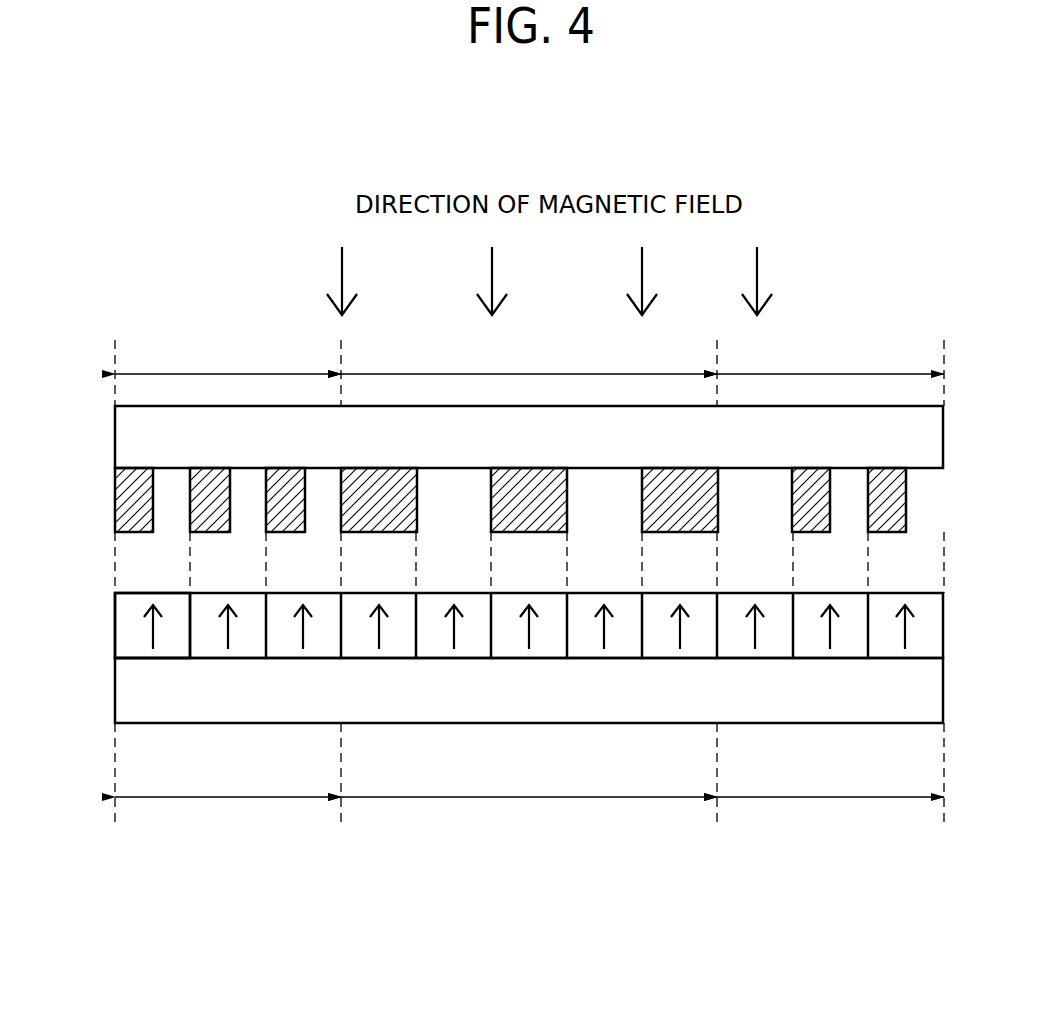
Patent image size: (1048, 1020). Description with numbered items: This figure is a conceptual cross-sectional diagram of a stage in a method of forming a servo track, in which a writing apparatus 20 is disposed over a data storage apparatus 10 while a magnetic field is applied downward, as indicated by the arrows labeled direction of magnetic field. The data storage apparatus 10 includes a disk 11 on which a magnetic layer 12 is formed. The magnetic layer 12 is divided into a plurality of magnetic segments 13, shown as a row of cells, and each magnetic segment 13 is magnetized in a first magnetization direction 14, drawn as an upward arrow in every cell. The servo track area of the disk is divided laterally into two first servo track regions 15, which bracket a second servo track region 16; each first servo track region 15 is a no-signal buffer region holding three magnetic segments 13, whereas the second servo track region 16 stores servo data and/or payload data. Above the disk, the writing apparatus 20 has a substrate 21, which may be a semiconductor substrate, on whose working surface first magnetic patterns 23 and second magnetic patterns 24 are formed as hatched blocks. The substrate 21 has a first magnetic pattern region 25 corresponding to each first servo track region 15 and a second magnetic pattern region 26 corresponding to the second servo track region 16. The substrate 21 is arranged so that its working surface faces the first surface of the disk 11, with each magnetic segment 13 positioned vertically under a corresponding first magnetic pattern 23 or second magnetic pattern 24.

The data storage apparatus 10 is at (532, 664).
The disk 11 is at (457, 710).
The magnetic layer 12 is at (947, 600).
The magnetic segments 13 is at (125, 608).
The first magnetization direction 14 is at (145, 626).
The first servo track region 15 is at (309, 800).
The second servo track region 16 is at (424, 800).
The writing apparatus 20 is at (531, 433).
The substrate 21 is at (120, 436).
The first magnetic pattern 23 is at (120, 500).
The second magnetic pattern 24 is at (552, 470).
The first magnetic pattern region 25 is at (234, 366).
The second magnetic pattern region 26 is at (420, 366).